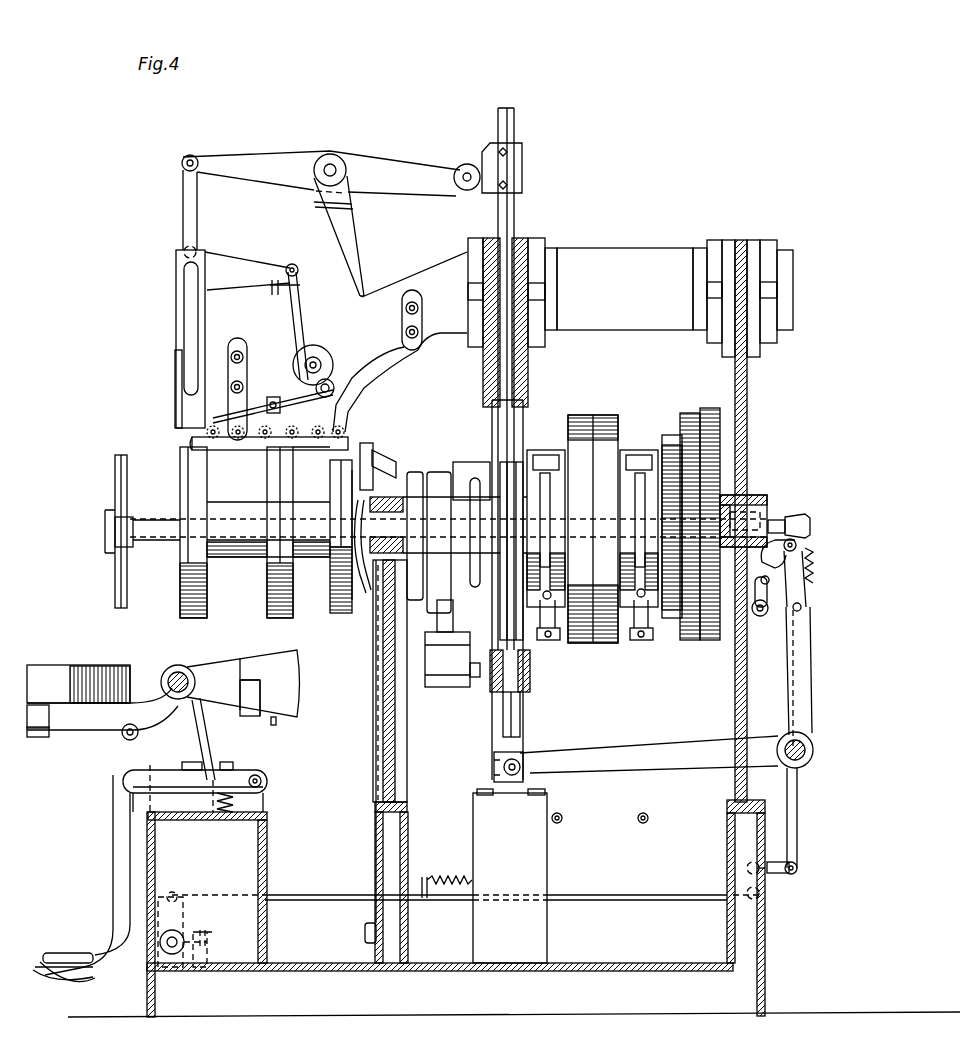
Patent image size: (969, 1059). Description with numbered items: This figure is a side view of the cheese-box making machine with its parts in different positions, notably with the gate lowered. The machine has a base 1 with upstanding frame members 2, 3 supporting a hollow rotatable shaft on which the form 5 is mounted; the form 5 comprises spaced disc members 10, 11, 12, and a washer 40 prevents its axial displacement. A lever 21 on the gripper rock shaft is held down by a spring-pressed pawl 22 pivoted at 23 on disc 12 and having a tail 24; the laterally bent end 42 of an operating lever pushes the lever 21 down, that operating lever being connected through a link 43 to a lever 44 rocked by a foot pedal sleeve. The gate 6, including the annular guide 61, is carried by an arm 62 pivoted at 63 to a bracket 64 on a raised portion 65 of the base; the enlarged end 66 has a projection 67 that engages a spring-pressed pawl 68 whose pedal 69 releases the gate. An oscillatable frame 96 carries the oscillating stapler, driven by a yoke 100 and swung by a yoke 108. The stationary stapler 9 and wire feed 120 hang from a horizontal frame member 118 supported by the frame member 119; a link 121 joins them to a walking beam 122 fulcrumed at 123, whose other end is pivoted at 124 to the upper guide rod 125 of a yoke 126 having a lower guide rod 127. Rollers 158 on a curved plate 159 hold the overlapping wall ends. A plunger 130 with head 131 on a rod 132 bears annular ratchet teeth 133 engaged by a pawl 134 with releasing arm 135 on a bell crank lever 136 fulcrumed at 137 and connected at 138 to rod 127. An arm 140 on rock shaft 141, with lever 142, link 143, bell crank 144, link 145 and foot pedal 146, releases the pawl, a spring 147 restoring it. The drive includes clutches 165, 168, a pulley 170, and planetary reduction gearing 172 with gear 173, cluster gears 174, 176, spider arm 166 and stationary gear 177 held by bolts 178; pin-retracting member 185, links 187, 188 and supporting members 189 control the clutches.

The base 1 is at (275, 1000).
The frame member 2 is at (375, 768).
The frame member 3 is at (742, 241).
The form 5 is at (179, 817).
The gate 6 is at (102, 690).
The stationary stapler 9 is at (174, 375).
The disc member 10 is at (205, 587).
The disc member 11 is at (270, 572).
The disc member 12 is at (328, 612).
The lever 21 is at (340, 493).
The pawl 22 is at (340, 553).
The pivot 23 is at (340, 577).
The tail 24 is at (358, 607).
The washer 40 is at (378, 462).
The laterally bent end 42 is at (363, 447).
The link 43 is at (374, 876).
The lever 44 is at (366, 940).
The annular guide 61 is at (92, 673).
The arm 62 is at (72, 720).
The pivot 63 is at (178, 672).
The bracket 64 is at (200, 722).
The raised portion 65 is at (267, 831).
The enlarged end 66 is at (259, 681).
The projection 67 is at (256, 682).
The spring-pressed pawl 68 is at (217, 777).
The pedal 69 is at (130, 740).
The oscillatable frame 96 is at (477, 677).
The yoke 100 is at (430, 497).
The yoke 108 is at (417, 472).
The horizontal frame member 118 is at (438, 280).
The frame member 119 is at (517, 241).
The wire feed 120 is at (287, 340).
The link 121 is at (187, 212).
The walking beam 122 is at (268, 160).
The fulcrum 123 is at (335, 168).
The pivotal connection 124 is at (463, 172).
The upper guide rod 125 is at (513, 213).
The yoke 126 is at (505, 477).
The lower guide rod 127 is at (518, 713).
The plunger 130 is at (409, 514).
The head 131 is at (117, 570).
The rod 132 is at (450, 503).
The annular ratchet teeth 133 is at (796, 540).
The spring-pressed pawl 134 is at (778, 525).
The releasing arm 135 is at (716, 620).
The bell crank lever 136 is at (636, 766).
The fulcrum 137 is at (723, 763).
The connection 138 is at (523, 760).
The arm 140 is at (727, 660).
The rock shaft 141 is at (742, 660).
The lever 142 is at (768, 640).
The link 143 is at (800, 853).
The bell crank 144 is at (780, 873).
The link 145 is at (588, 893).
The foot pedal 146 is at (60, 982).
The spring 147 is at (447, 876).
The rollers 158 is at (197, 437).
The curved plate 159 is at (260, 440).
The clutch 165 is at (636, 435).
The spider arm 166 is at (677, 437).
The clutch 168 is at (546, 435).
The pulley 170 is at (593, 437).
The planetary reduction gearing 172 is at (728, 495).
The gear 173 is at (723, 498).
The gear 174 is at (692, 422).
The gear 176 is at (716, 410).
The preliminary gear 177 is at (745, 497).
The bolts 178 is at (800, 478).
The pin-retracting member 185 is at (583, 632).
The link 187 is at (648, 642).
The link 188 is at (548, 641).
The supporting members 189 is at (586, 640).